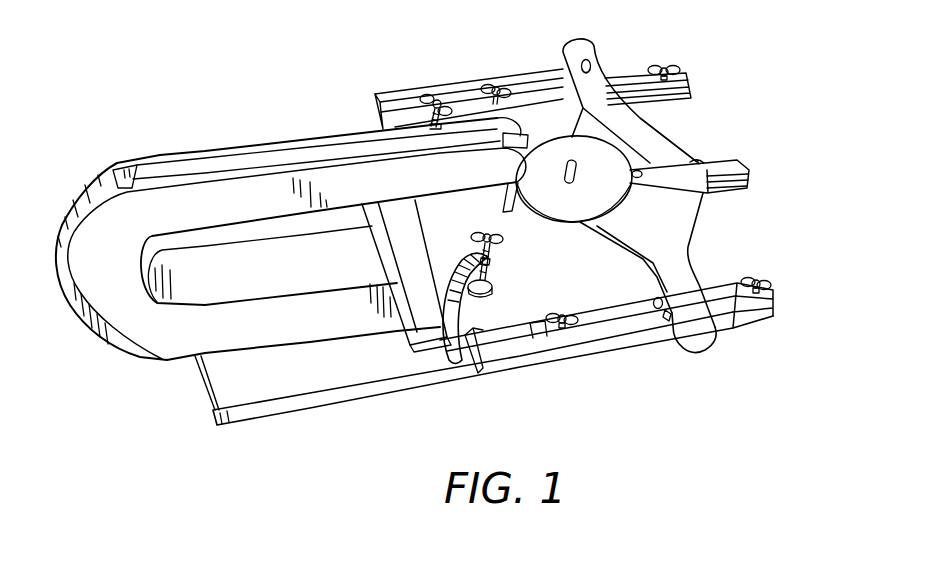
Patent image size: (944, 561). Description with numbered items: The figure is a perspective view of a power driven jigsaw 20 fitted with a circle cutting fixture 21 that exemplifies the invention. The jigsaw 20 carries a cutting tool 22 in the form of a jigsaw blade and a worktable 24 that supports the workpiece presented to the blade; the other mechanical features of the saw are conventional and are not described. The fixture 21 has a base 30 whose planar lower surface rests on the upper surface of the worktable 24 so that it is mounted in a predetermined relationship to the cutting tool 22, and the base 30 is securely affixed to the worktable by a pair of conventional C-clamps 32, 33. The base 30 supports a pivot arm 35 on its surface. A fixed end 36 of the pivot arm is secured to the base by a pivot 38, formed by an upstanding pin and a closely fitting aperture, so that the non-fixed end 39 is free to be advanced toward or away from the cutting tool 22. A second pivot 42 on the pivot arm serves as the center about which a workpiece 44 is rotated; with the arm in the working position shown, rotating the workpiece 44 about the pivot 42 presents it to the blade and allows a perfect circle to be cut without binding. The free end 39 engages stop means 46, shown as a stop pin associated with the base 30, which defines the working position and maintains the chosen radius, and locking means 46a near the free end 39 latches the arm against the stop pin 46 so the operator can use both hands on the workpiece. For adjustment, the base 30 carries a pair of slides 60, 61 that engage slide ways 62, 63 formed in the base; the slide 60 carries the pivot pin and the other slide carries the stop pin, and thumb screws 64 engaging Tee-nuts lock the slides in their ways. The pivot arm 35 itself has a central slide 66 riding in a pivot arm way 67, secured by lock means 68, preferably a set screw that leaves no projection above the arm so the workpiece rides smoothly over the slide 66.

The jigsaw 20 is at (166, 362).
The circle cutting fixture 21 is at (633, 53).
The cutting tool 22 is at (508, 216).
The worktable 24 is at (431, 323).
The base 30 is at (555, 358).
The C-clamp 32 is at (448, 362).
The C-clamp 33 is at (426, 95).
The pivot arm 35 is at (701, 161).
The fixed end 36 is at (563, 45).
The pivot 38 is at (581, 65).
The non-fixed end 39 is at (718, 338).
The second pivot 42 is at (577, 161).
The workpiece 44 is at (627, 207).
The stop means 46 is at (656, 309).
The locking means 46a is at (667, 320).
The slide 60 is at (678, 71).
The slide 61 is at (773, 298).
The slide way 62 is at (376, 118).
The slide way 63 is at (466, 372).
The thumb screw 64 is at (488, 86).
The central slide 66 is at (746, 187).
The pivot arm way 67 is at (712, 163).
The lock means 68 is at (643, 172).